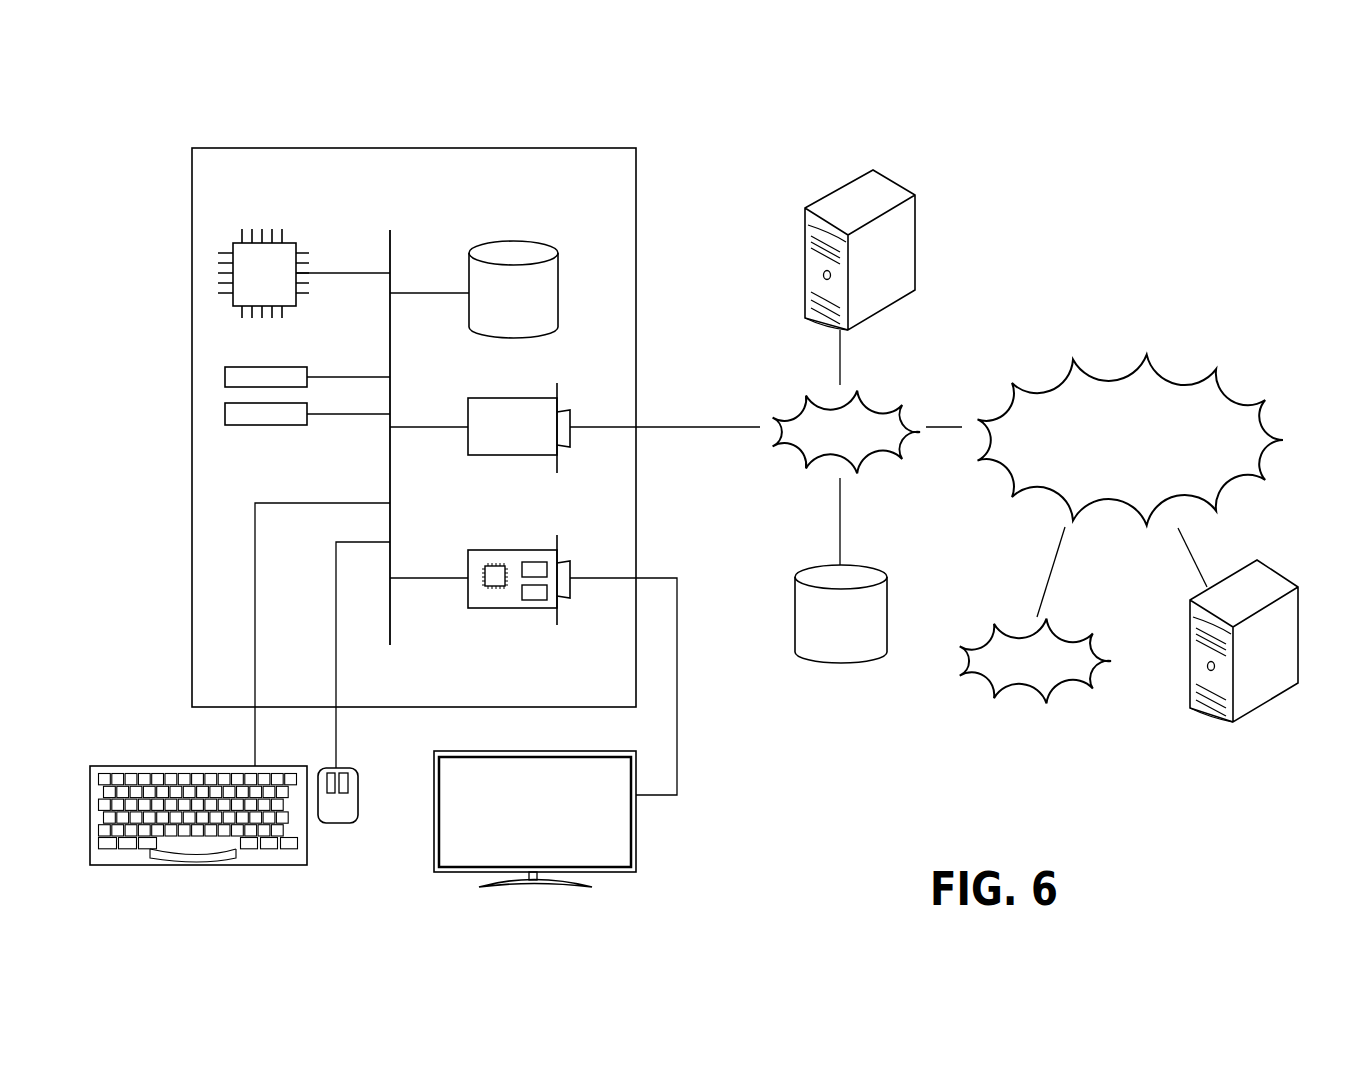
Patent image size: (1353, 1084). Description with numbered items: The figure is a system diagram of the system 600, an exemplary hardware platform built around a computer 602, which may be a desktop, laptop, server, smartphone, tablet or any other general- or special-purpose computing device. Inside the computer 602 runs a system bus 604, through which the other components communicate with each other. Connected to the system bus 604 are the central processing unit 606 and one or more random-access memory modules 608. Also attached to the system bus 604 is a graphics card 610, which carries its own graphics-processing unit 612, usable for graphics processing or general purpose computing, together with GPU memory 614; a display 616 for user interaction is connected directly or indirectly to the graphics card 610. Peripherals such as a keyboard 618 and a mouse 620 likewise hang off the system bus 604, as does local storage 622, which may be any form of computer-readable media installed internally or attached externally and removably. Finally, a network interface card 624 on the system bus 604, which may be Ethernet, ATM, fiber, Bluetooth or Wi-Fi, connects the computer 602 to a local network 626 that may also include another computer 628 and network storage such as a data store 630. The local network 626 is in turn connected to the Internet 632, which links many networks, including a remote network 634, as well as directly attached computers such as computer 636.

The system 600 is at (268, 108).
The computer 602 is at (588, 148).
The system bus 604 is at (392, 243).
The central processing unit 606 is at (290, 243).
The random-access memory modules 608 is at (307, 408).
The graphics card 610 is at (550, 648).
The graphics-processing unit 612 is at (492, 586).
The GPU memory 614 is at (530, 600).
The display 616 is at (636, 852).
The keyboard 618 is at (200, 866).
The mouse 620 is at (335, 825).
The local storage 622 is at (558, 276).
The network interface card 624 is at (468, 410).
The local network 626 is at (898, 380).
The computer 628 is at (897, 180).
The data store 630 is at (873, 568).
The Internet 632 is at (1175, 345).
The remote network 634 is at (1092, 615).
The computer 636 is at (1275, 568).